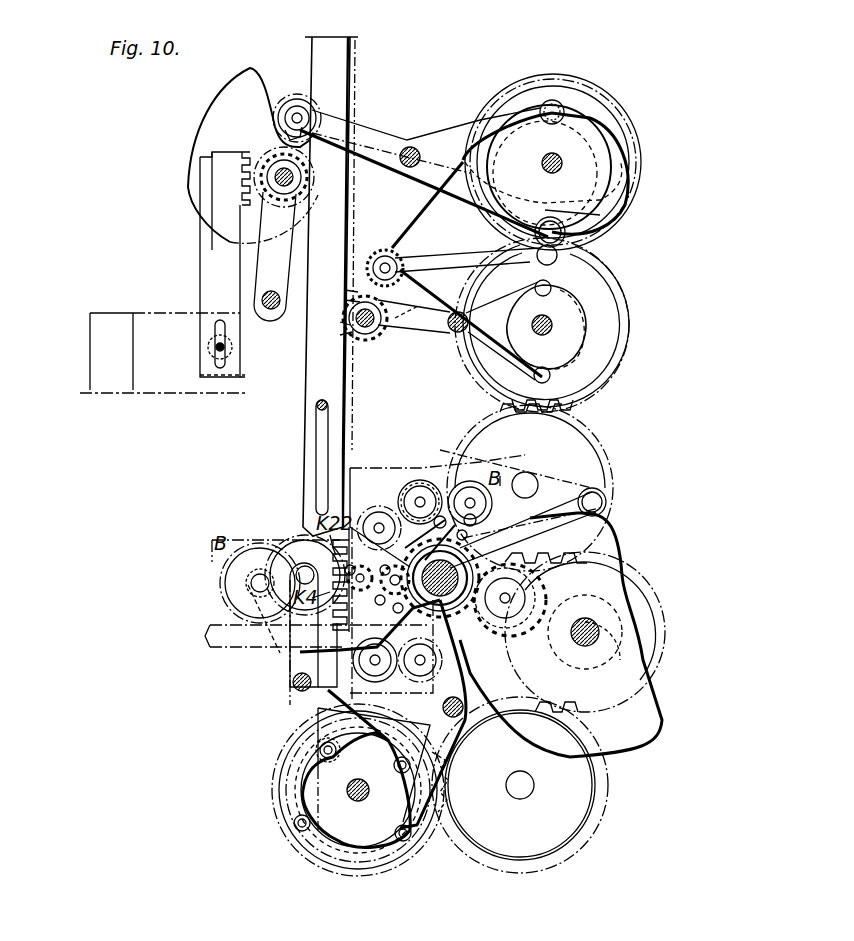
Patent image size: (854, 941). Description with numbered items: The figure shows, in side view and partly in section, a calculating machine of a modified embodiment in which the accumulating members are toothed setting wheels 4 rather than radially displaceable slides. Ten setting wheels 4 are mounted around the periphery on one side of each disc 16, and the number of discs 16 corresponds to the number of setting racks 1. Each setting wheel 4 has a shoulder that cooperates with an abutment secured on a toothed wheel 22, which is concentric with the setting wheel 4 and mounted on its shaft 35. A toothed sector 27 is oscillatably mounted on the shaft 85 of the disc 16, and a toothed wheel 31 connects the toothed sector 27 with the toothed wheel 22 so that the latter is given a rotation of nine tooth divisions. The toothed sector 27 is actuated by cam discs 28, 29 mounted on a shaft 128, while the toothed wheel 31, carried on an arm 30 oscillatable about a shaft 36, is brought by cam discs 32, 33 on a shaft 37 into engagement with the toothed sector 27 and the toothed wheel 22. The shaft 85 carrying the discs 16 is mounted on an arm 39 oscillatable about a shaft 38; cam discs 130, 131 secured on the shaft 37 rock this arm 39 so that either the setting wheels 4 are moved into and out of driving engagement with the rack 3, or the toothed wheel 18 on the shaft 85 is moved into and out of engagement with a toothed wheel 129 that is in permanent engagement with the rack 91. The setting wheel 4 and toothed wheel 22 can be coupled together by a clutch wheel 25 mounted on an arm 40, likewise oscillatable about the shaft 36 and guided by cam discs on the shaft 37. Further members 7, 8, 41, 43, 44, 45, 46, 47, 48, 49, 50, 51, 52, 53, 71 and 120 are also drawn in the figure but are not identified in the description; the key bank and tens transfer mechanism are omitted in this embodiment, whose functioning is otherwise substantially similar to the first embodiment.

The setting rack 1 is at (118, 290).
The rack 3 is at (340, 200).
The setting wheel 4 is at (413, 498).
The lever arm with gear 7 is at (272, 162).
The frame plate 8 is at (198, 172).
The disc 16 is at (412, 675).
The toothed wheel 18 is at (520, 530).
The toothed wheel 22 is at (442, 515).
The clutch wheel 25 is at (232, 567).
The toothed sector 27 is at (383, 714).
The cam disc 28 is at (608, 537).
The cam disc 29 is at (600, 600).
The arm 30 is at (290, 692).
The toothed wheel 31 is at (290, 545).
The cam disc 32 is at (325, 842).
The cam disc 33 is at (400, 850).
The shaft 35 is at (470, 497).
The shaft 36 is at (292, 676).
The shaft 37 is at (347, 790).
The shaft 38 is at (466, 740).
The arm 39 is at (445, 822).
The arm 40 is at (262, 645).
The pawl 41 is at (345, 335).
The gear 43 is at (366, 340).
The gear 44 is at (400, 262).
The pawl 45 is at (345, 322).
The link 46 is at (348, 294).
The cam wheel 47 is at (570, 350).
The link 48 is at (425, 320).
The link 49 is at (440, 325).
The gear 50 is at (298, 96).
The lever 51 is at (372, 135).
The cam wheel 52 is at (552, 173).
The link 53 is at (605, 213).
The rack 71 is at (205, 290).
The shaft 85 is at (565, 502).
The rack 91 is at (598, 650).
The gear 120 is at (392, 526).
The shaft 128 is at (582, 615).
The toothed wheel 129 is at (535, 612).
The cam disc 130 is at (375, 830).
The cam disc 131 is at (355, 825).